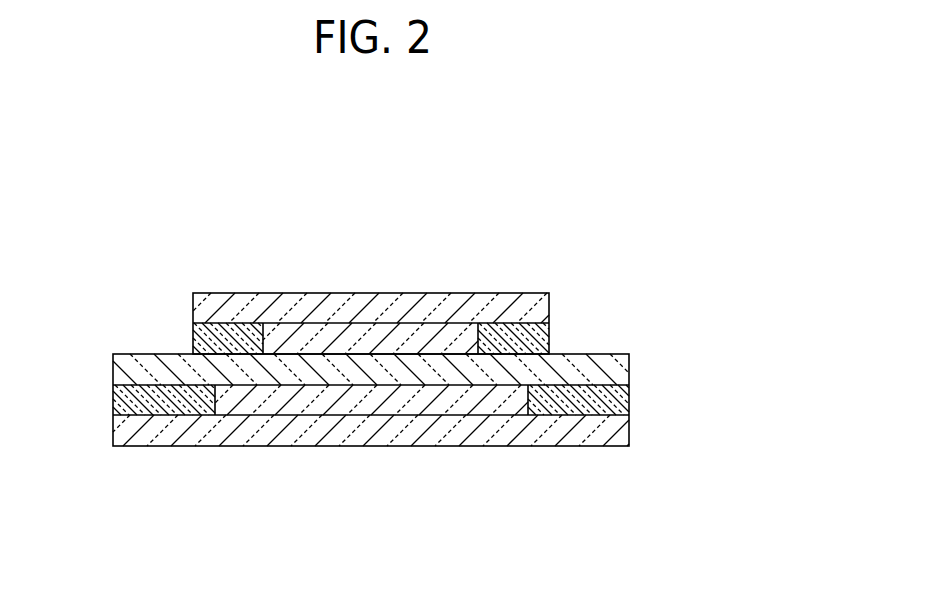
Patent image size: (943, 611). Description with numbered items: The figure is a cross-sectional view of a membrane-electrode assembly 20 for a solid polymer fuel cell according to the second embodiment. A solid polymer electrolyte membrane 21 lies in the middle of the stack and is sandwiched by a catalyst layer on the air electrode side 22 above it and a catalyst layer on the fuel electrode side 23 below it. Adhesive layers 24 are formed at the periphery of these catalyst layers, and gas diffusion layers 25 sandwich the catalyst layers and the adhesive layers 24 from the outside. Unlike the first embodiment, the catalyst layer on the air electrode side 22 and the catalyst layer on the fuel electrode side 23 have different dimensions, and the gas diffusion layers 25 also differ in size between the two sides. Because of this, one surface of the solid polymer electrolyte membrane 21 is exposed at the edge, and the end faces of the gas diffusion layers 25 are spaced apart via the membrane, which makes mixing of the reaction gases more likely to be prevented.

The membrane-electrode assembly 20 is at (516, 173).
The solid polymer electrolyte membrane 21 is at (610, 373).
The catalyst layer on the air electrode side 22 is at (432, 340).
The catalyst layer on the fuel electrode side 23 is at (461, 405).
The adhesive layer 24 is at (208, 341).
The gas diffusion layer 25 is at (533, 312).